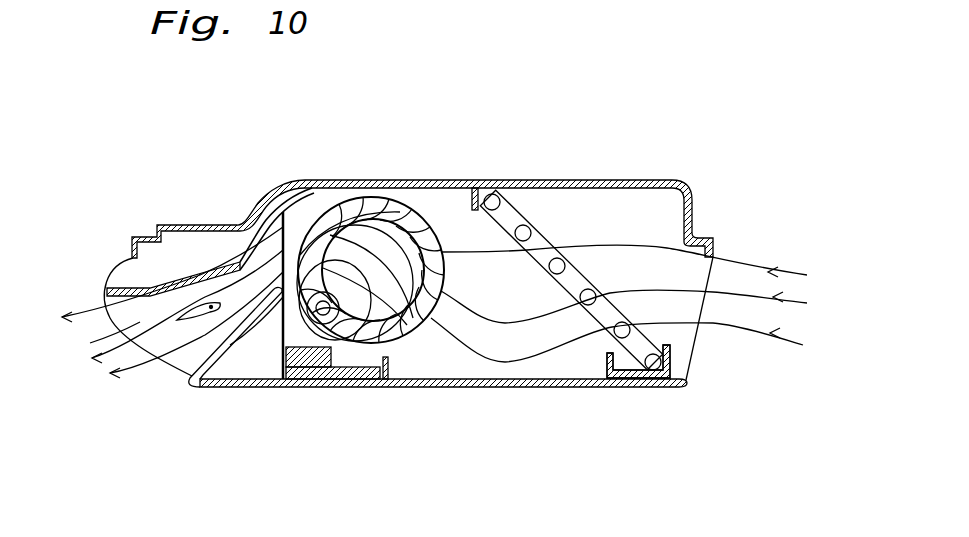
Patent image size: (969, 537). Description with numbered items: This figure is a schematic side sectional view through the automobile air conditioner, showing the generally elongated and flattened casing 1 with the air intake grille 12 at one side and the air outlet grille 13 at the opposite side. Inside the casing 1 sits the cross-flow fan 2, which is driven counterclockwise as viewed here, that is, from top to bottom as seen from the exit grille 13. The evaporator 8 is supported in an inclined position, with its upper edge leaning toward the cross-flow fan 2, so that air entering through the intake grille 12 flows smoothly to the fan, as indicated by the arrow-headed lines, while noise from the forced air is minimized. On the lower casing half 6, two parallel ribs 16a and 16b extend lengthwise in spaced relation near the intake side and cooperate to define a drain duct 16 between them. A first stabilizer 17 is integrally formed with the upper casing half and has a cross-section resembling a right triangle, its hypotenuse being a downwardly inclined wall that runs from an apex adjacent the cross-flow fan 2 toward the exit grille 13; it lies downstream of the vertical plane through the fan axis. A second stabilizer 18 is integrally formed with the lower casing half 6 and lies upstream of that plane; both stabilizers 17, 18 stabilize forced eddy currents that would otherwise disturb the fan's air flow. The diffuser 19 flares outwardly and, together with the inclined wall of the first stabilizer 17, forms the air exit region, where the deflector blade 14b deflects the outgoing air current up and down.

The casing 1 is at (630, 182).
The cross-flow fan 2 is at (377, 202).
The lower casing half 6 is at (495, 390).
The evaporator 8 is at (510, 215).
The air intake grille 12 is at (700, 296).
The air outlet grille 13 is at (170, 302).
The deflector blade 14b is at (212, 303).
The drain duct 16 is at (630, 377).
The parallel rib 16a is at (615, 368).
The parallel rib 16b is at (668, 365).
The first stabilizer 17 is at (242, 333).
The second stabilizer 18 is at (398, 374).
The diffuser 19 is at (170, 280).